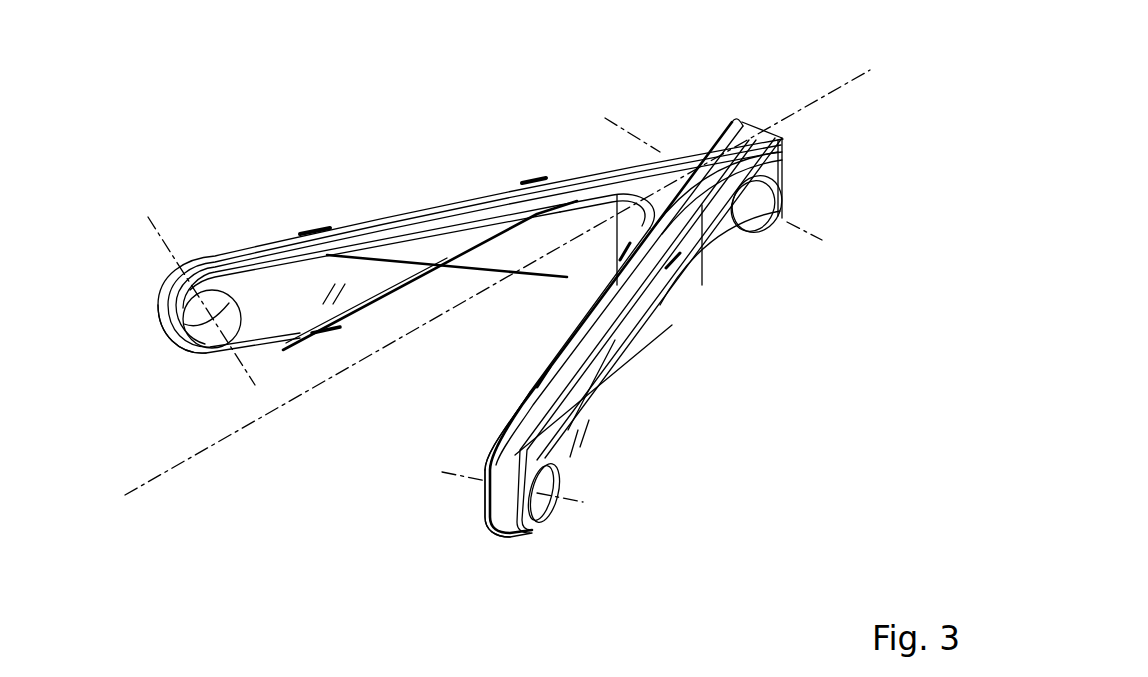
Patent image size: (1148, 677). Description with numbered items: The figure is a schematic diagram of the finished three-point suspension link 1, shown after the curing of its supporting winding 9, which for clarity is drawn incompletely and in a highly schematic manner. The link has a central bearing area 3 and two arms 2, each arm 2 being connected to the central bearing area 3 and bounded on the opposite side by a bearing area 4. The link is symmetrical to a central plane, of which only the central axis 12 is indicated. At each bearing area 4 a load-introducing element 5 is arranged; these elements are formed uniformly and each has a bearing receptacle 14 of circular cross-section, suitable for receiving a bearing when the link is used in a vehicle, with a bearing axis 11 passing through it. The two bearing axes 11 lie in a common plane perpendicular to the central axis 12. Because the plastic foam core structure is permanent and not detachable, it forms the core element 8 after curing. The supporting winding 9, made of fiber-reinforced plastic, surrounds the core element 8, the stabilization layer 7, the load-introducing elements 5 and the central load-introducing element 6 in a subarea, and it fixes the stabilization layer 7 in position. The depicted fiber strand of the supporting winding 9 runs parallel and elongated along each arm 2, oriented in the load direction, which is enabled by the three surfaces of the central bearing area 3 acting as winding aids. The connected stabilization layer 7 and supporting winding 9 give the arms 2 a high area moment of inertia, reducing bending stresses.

The three-point suspension link 1 is at (162, 133).
The arm 2 is at (465, 188).
The central bearing area 3 is at (713, 126).
The bearing area 4 is at (153, 335).
The load-introducing element 5 is at (197, 350).
The central load-introducing element 6 is at (750, 222).
The stabilization layer 7 is at (292, 302).
The core element 8 is at (643, 168).
The supporting winding 9 is at (501, 507).
The bearing axis 11 is at (172, 255).
The central axis 12 is at (792, 110).
The bearing receptacle 14 is at (760, 198).